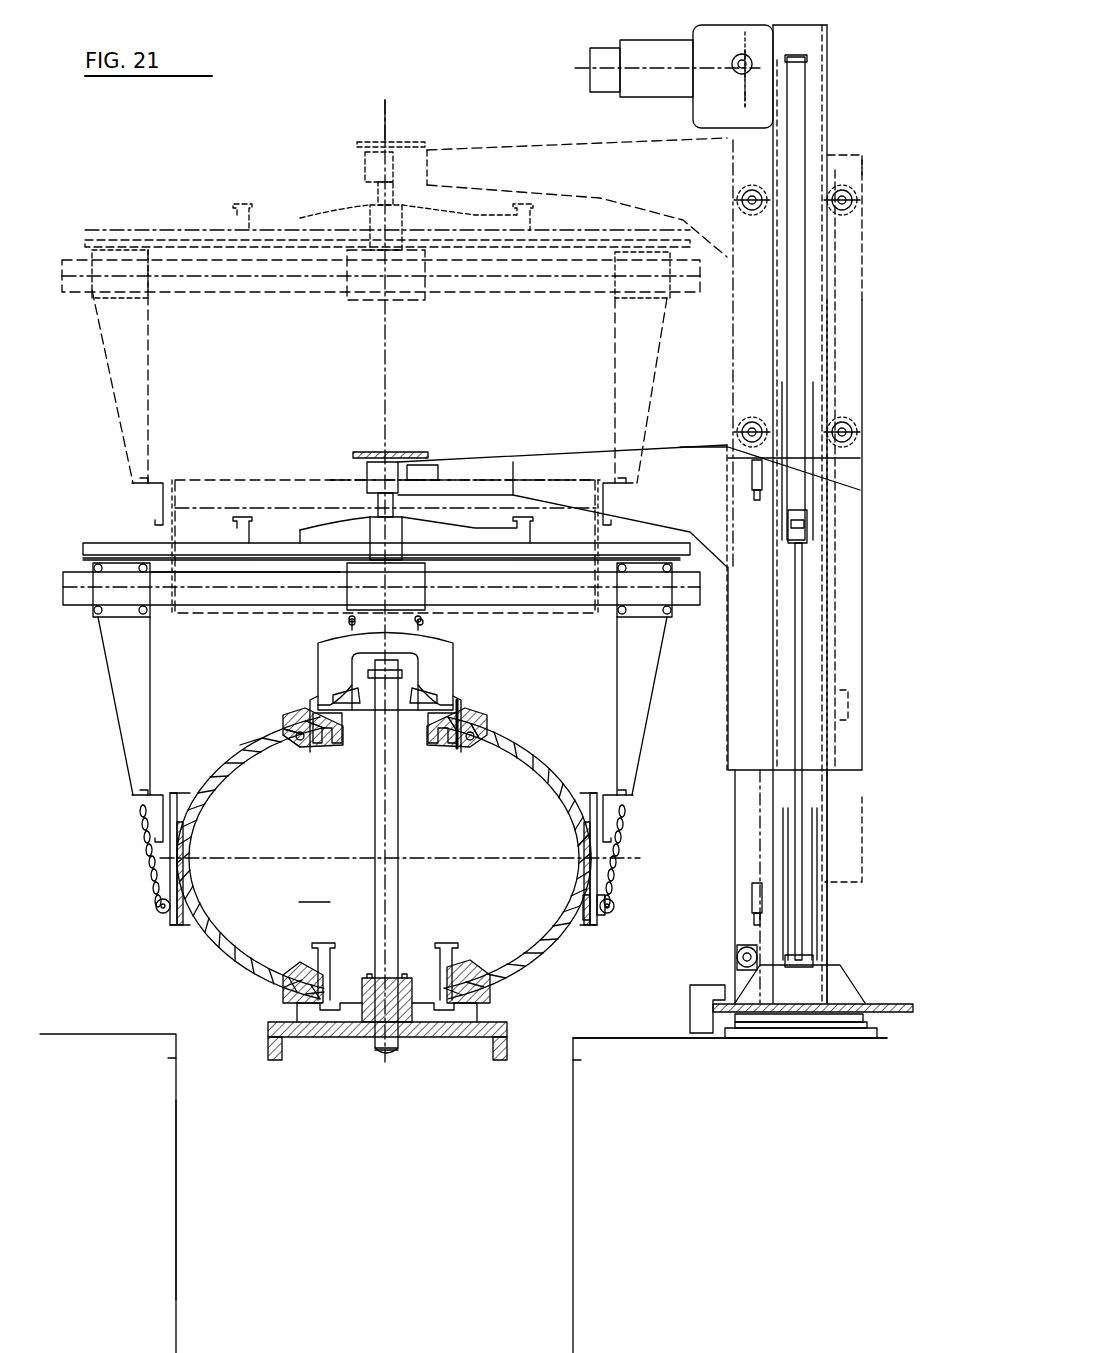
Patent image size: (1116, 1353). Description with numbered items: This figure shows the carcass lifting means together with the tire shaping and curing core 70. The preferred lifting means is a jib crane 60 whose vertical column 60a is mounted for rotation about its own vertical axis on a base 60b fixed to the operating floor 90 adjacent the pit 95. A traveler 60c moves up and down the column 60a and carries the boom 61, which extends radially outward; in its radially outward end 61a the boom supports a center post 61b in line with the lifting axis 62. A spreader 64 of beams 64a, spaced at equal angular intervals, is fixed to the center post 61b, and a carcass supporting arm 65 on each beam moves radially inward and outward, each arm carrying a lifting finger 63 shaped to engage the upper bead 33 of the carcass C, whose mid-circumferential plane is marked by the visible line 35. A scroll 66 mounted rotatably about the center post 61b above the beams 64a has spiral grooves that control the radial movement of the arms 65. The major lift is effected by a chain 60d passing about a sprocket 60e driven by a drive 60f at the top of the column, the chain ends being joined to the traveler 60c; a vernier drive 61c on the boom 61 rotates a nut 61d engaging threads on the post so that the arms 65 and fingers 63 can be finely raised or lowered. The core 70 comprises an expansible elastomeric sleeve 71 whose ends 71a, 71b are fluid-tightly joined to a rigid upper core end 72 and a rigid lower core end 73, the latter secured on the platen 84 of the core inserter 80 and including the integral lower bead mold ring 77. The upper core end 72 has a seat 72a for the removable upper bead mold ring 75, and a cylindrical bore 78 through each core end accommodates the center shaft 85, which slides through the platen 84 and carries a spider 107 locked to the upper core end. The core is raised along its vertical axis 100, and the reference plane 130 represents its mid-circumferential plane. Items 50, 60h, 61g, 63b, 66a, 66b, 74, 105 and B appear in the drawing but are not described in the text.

The carrier frame 50 is at (221, 466).
The jib crane 60 is at (510, 122).
The vertical column 60a is at (820, 118).
The base 60b is at (835, 1030).
The traveler 60c is at (860, 300).
The chain 60d is at (733, 800).
The sprocket 60e is at (738, 55).
The drive 60f is at (648, 52).
The roller 60h is at (737, 957).
The boom 61 is at (576, 468).
The radially outward end 61a is at (370, 478).
The center post 61b is at (380, 500).
The vernier drive 61c is at (420, 468).
The rotatable nut 61d is at (392, 455).
The fitting 61g is at (752, 470).
The lifting axis 62 is at (378, 140).
The lifting finger 63 is at (160, 820).
The chain 63b is at (150, 862).
The spreader 64 is at (75, 585).
The beams 64a is at (222, 598).
The carcass supporting arms 65 is at (108, 690).
The scroll 66 is at (640, 545).
The plate 66a is at (825, 1005).
The bracket 66b is at (700, 1010).
The carcass shaping and curing core 70 is at (212, 965).
The elastomeric sleeve 71 is at (292, 748).
The sleeve end 71a is at (322, 745).
The sleeve end 71b is at (447, 962).
The upper core end 72 is at (343, 738).
The seat 72a is at (460, 725).
The lower core end 73 is at (330, 960).
The vessel interior 74 is at (314, 890).
The upper bead mold ring 75 is at (300, 716).
The lower bead mold ring 77 is at (292, 1003).
The cylindrical bore 78 is at (440, 740).
The core inserter 80 is at (335, 1158).
The platen 84 is at (500, 1030).
The center shaft 85 is at (400, 826).
The operating floor 90 is at (588, 1040).
The pit 95 is at (262, 1198).
The vertical axis 100 is at (385, 1058).
The cap 105 is at (445, 652).
The spider 107 is at (358, 678).
The first reference plane 130 is at (597, 858).
The upper bead 33 is at (283, 740).
The visible line 35 is at (605, 900).
The point B is at (174, 925).
The carcass C is at (243, 742).